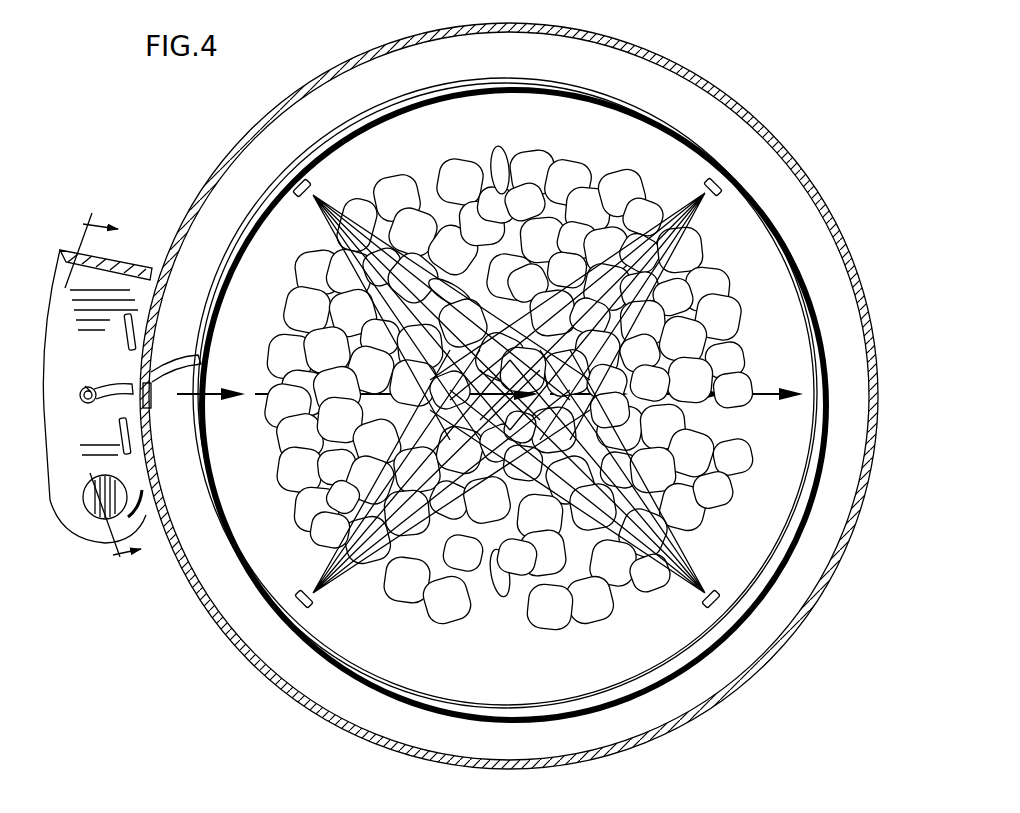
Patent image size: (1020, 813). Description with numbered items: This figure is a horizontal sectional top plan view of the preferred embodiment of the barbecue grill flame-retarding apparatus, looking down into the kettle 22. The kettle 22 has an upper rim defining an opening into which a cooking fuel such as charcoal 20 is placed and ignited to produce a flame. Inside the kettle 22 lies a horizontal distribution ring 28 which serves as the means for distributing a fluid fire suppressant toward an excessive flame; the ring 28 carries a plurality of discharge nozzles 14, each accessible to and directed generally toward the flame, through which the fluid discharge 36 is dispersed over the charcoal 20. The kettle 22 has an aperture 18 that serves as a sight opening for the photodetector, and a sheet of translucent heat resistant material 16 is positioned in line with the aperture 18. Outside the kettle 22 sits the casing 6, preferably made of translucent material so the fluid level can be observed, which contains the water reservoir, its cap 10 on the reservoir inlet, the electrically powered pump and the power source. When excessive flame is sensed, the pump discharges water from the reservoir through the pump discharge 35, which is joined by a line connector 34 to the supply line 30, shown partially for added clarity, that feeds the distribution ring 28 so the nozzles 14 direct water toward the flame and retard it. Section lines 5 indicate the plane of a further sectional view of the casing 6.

The section line 5- 5 is at (103, 386).
The casing 6 is at (50, 505).
The cap 10 is at (93, 517).
The discharge nozzle 14 is at (700, 180).
The sheet of translucent heat resistant material 16 is at (150, 400).
The aperture 18 is at (153, 416).
The charcoal 20 is at (497, 630).
The kettle 22 is at (708, 67).
The horizontal distribution ring 28 is at (655, 683).
The supply line 30 is at (190, 355).
The line connector 34 is at (83, 402).
The pump discharge 35 is at (84, 382).
The fluid discharge 36 is at (340, 580).